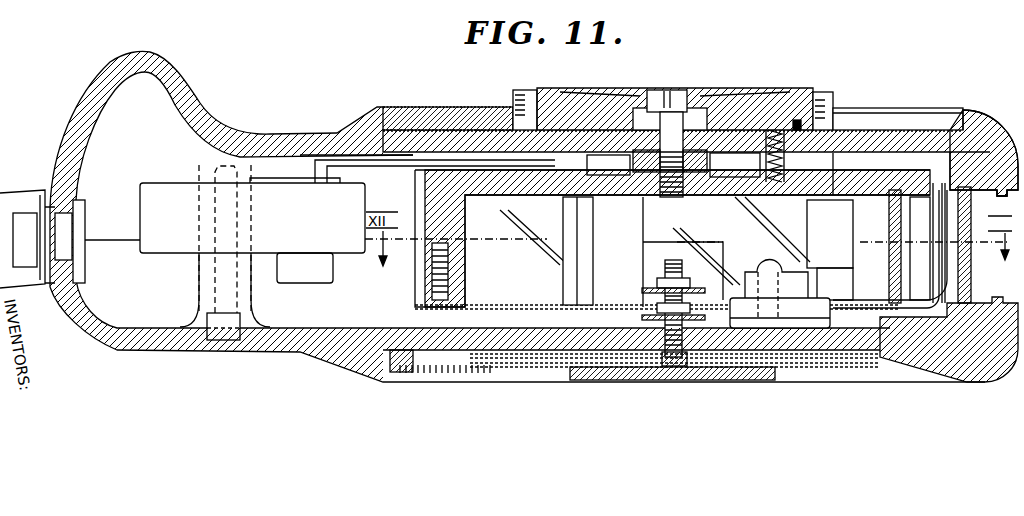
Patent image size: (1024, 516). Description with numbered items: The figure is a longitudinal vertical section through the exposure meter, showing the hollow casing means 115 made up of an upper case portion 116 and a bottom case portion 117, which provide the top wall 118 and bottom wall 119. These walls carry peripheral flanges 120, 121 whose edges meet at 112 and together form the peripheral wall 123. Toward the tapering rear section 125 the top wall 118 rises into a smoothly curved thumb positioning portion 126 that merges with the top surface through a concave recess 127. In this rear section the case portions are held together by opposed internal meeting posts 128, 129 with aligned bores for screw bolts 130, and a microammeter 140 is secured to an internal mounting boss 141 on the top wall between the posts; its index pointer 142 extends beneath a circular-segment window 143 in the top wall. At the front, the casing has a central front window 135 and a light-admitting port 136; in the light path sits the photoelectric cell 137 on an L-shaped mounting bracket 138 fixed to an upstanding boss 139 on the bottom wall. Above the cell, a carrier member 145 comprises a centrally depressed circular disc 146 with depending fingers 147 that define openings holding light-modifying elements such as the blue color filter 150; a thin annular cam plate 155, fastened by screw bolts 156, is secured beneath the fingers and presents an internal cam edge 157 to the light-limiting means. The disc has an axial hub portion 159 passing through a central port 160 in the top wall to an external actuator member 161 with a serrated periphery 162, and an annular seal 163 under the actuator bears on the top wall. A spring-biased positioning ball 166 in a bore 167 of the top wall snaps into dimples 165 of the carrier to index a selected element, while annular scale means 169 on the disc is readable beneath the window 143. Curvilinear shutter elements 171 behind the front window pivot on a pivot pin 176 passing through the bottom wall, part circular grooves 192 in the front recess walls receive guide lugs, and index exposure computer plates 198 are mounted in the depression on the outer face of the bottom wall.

The meeting edges of the flanges 112 is at (98, 240).
The casing means 115 is at (76, 93).
The upper case portion 116 is at (987, 110).
The bottom case portion 117 is at (980, 370).
The top wall 118 is at (877, 147).
The bottom wall 119 is at (906, 343).
The peripheral flange 120 is at (98, 240).
The peripheral flange 121 is at (123, 238).
The peripheral wall 123 is at (56, 160).
The rear section 125 is at (68, 315).
The thumb positioning portion 126 is at (144, 50).
The concave recess 127 is at (228, 122).
The internal meeting post 128 is at (199, 172).
The internal meeting post 129 is at (200, 275).
The screw bolt 130 is at (218, 296).
The front window 135 is at (966, 268).
The light-admitting port 136 is at (953, 298).
The photoelectric cell 137 is at (813, 250).
The L-shaped mounting bracket 138 is at (788, 292).
The upstanding boss 139 is at (750, 318).
The microammeter 140 is at (350, 252).
The internal mounting boss 141 is at (268, 165).
The index pointer 142 is at (350, 157).
The window 143 is at (480, 137).
The carrier member 145 is at (833, 173).
The centrally depressed circular disc 146 is at (743, 183).
The arcuate segments or fingers 147 is at (455, 251).
The blue color filter 150 is at (870, 222).
The cam plate 155 is at (482, 305).
The screw bolt 156 is at (433, 289).
The internal cam edge 157 is at (517, 306).
The axial hub portion 159 is at (630, 127).
The central port 160 is at (673, 163).
The external circular actuator member 161 is at (750, 74).
The serrated or castellated outer periphery 162 is at (532, 72).
The annular seal 163 is at (797, 130).
The dimple 165 is at (780, 180).
The spring-biased positioning ball 166 is at (706, 253).
The bore 167 is at (779, 130).
The annular scale means 169 is at (913, 167).
The shutter element 171 is at (946, 253).
The pivot pin 176 is at (695, 265).
The part circular groove 192 is at (999, 225).
The index exposure computer plates 198 is at (512, 362).